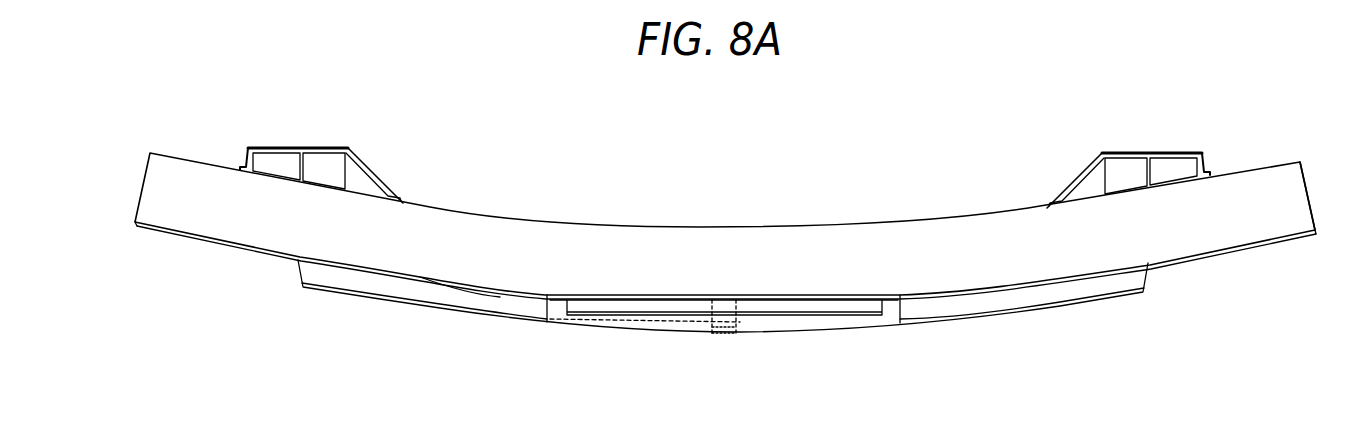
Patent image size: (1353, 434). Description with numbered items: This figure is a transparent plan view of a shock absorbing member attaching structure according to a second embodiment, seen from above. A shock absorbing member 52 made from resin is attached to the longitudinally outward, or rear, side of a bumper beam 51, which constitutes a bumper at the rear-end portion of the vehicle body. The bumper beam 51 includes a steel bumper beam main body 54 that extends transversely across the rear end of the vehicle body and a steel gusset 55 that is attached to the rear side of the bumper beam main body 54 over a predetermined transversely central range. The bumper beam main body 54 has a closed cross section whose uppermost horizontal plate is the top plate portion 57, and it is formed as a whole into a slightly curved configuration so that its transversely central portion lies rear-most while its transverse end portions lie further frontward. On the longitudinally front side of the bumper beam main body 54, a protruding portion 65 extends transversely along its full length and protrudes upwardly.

The bumper beam 51 is at (141, 160).
The shock absorbing member 52 is at (322, 309).
The bumper beam main body 54 is at (1318, 185).
The gusset 55 is at (843, 303).
The top plate portion 57 is at (552, 238).
The protruding portion 65 is at (447, 282).